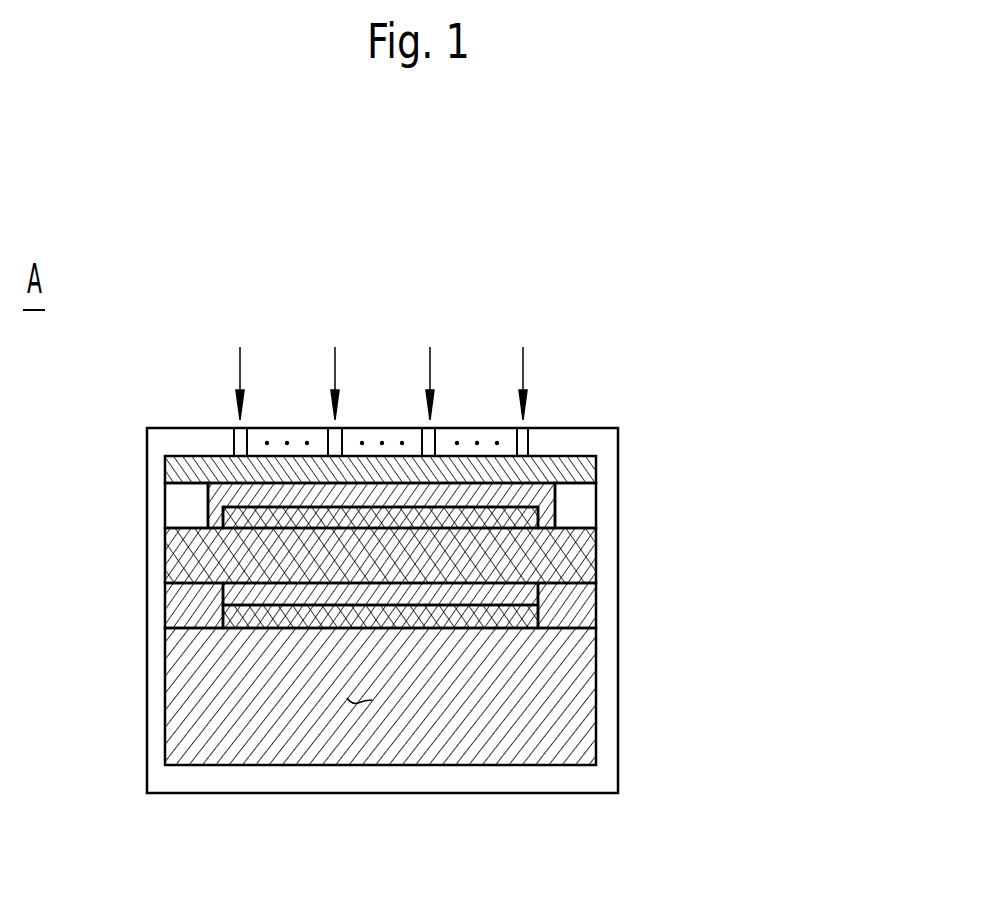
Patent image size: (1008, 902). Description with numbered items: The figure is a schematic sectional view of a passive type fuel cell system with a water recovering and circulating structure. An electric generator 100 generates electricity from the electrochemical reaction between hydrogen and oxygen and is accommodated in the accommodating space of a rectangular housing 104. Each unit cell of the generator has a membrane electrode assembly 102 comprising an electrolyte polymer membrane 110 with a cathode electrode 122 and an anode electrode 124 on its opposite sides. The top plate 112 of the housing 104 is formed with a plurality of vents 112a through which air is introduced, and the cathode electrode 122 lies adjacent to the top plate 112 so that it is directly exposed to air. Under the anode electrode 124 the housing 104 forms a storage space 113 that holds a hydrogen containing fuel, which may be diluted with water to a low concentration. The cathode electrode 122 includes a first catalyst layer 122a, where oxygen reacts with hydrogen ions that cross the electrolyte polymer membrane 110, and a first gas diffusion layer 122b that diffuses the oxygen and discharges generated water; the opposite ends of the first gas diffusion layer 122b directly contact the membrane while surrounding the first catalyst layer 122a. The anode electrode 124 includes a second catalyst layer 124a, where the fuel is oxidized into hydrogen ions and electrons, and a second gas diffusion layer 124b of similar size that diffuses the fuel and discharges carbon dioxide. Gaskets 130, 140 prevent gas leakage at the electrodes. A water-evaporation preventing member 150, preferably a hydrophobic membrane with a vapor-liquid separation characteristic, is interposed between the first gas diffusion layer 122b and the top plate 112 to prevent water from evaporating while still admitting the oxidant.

The electric generator 100 is at (848, 458).
The membrane electrode assembly 102 is at (790, 553).
The housing 104 is at (167, 708).
The electrolyte polymer membrane 110 is at (167, 548).
The top plate 112 is at (544, 438).
The vents 112a is at (237, 437).
The storage space 113 is at (352, 702).
The cathode electrode 122 is at (725, 510).
The first catalyst layer 122a is at (538, 518).
The first gas diffusion layer 122b is at (556, 490).
The anode electrode 124 is at (725, 612).
The second catalyst layer 124a is at (538, 592).
The second gas diffusion layer 124b is at (538, 618).
The gasket 130 is at (167, 493).
The gasket 140 is at (167, 608).
The water-evaporation preventing member 150 is at (592, 460).